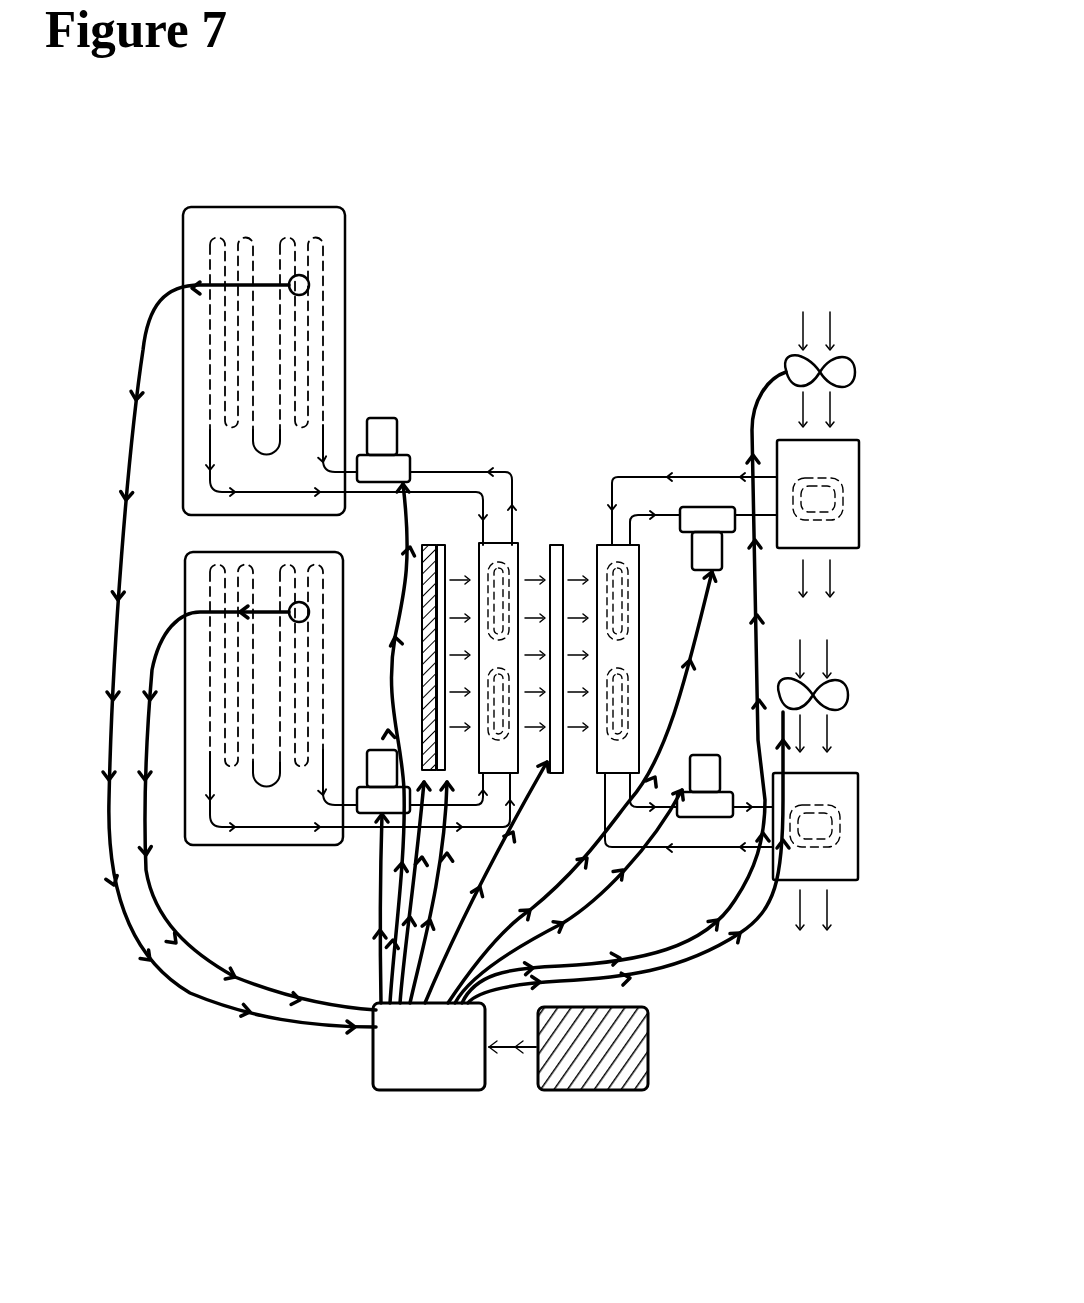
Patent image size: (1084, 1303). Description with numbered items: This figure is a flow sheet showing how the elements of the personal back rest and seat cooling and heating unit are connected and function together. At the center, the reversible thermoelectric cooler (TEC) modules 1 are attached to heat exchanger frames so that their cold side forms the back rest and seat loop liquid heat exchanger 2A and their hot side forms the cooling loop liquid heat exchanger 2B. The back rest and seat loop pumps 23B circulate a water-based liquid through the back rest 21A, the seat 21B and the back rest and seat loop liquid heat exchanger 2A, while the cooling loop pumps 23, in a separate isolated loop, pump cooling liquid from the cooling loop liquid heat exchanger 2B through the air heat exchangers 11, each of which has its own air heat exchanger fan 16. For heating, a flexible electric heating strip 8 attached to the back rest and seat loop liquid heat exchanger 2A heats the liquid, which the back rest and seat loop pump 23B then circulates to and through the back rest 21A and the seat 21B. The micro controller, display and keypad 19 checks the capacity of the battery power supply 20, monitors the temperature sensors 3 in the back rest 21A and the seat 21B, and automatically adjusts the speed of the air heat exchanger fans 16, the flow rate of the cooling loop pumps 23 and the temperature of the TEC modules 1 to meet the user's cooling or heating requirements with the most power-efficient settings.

The reversible thermoelectric cooler (TEC) modules 1 is at (448, 542).
The back rest and seat loop liquid heat exchanger 2A is at (520, 543).
The cooling loop liquid heat exchanger 2B is at (618, 546).
The temperature sensor 3 is at (313, 285).
The electric heating strip 8 is at (420, 672).
The air heat exchanger 11 is at (851, 463).
The air heat exchanger fan 16 is at (862, 372).
The micro controller, display and keypad 19 is at (432, 1093).
The battery power supply 20 is at (597, 1093).
The back rest 21A is at (350, 220).
The seat 21B is at (233, 848).
The cooling loop pump 23 is at (695, 520).
The back rest and seat loop pump 23B is at (365, 484).